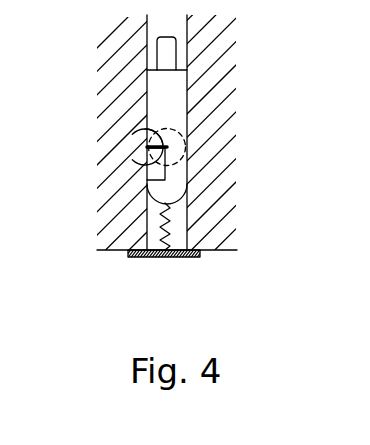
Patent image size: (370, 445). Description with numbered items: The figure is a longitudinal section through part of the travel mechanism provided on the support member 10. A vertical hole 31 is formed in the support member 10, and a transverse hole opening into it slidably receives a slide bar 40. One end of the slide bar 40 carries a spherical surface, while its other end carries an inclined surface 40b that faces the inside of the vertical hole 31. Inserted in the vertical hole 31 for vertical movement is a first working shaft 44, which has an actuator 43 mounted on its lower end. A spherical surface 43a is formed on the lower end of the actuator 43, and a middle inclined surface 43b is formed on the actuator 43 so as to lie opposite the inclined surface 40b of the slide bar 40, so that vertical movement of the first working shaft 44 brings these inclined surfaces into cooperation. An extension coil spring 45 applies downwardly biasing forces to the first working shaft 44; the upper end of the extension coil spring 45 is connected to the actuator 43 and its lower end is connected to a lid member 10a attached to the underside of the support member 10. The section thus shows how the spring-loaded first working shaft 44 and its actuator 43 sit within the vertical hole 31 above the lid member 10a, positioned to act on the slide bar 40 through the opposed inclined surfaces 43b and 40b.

The support member 10 is at (227, 154).
The lid member 10a is at (150, 257).
The vertical hole 31 is at (188, 114).
The slide bar 40 is at (134, 160).
The inclined surface 40b is at (134, 132).
The actuator 43 is at (180, 78).
The spherical surface 43a is at (174, 204).
The middle inclined surface 43b is at (146, 149).
The first working shaft 44 is at (168, 50).
The extension coil spring 45 is at (171, 229).